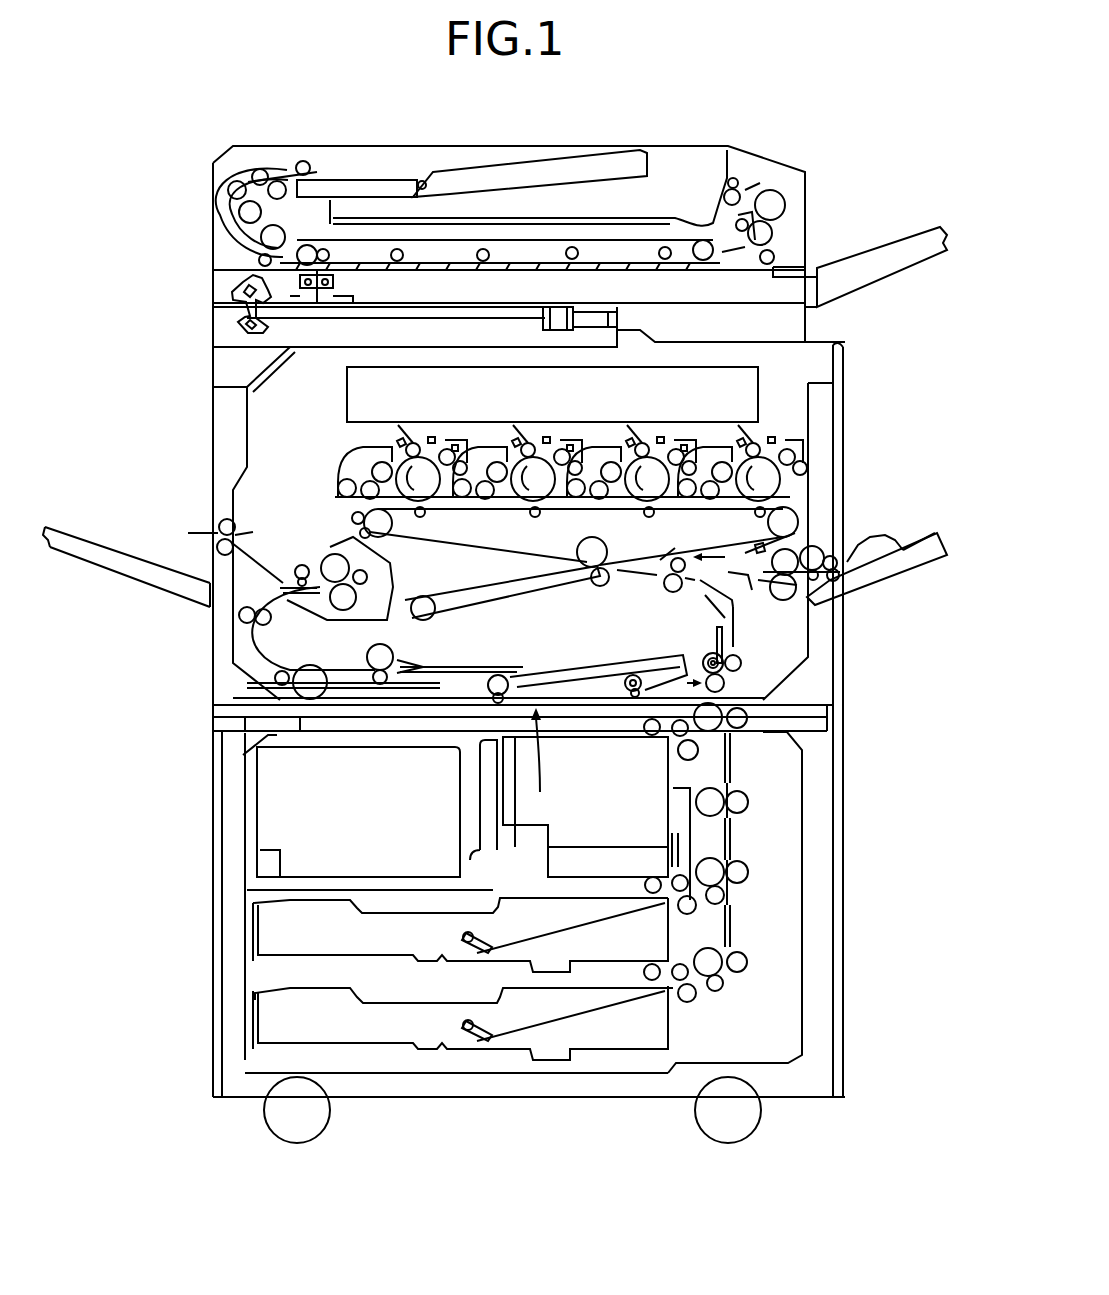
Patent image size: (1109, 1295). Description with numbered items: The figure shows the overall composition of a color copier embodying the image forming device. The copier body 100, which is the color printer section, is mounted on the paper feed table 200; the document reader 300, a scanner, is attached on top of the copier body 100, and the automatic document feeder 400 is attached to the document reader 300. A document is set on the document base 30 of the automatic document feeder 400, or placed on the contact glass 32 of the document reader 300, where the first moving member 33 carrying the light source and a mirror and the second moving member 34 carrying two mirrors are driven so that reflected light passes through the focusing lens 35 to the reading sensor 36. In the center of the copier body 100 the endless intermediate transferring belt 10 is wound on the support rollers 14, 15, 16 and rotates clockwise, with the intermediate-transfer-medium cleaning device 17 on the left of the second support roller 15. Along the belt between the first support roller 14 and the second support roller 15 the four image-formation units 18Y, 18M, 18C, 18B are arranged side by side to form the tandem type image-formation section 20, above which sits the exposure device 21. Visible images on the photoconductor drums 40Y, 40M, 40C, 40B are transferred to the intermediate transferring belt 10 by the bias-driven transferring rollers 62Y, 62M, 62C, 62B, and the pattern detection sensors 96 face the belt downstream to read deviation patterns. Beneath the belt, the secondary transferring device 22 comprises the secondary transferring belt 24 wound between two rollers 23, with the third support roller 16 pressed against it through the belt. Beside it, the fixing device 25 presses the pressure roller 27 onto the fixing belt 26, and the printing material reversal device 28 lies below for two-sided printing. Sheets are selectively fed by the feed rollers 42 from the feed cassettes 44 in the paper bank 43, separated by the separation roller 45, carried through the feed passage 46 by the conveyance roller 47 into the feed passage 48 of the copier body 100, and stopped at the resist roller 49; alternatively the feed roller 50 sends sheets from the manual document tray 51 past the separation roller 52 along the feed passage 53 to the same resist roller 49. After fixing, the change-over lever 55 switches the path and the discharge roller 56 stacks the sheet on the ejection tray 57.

The intermediate transferring belt 10 is at (583, 532).
The first support roller 14 is at (795, 513).
The second support roller 15 is at (388, 532).
The third support roller 16 is at (595, 538).
The intermediate-transfer-medium cleaning device 17 is at (350, 518).
The yellow image-formation unit 18Y is at (422, 445).
The magenta image-formation unit 18M is at (542, 445).
The cyan image-formation unit 18C is at (666, 445).
The black image-formation unit 18B is at (775, 428).
The tandem type image-formation section 20 is at (594, 436).
The exposure device 21 is at (760, 385).
The secondary transferring device 22 is at (617, 577).
The rollers 23 is at (430, 620).
The secondary transferring belt 24 is at (510, 603).
The fixing device 25 is at (293, 617).
The fixing belt 26 is at (340, 550).
The pressure roller 27 is at (343, 610).
The printing material reversal device 28 is at (549, 753).
The document base 30 is at (470, 165).
The contact glass 32 is at (612, 262).
The first moving member 33 is at (345, 283).
The second moving member 34 is at (237, 310).
The focusing lens 35 is at (548, 310).
The reading sensor 36 is at (620, 318).
The yellow photoconductor drum 40Y is at (396, 455).
The magenta photoconductor drum 40M is at (513, 455).
The cyan photoconductor drum 40C is at (643, 455).
The black photoconductor drum 40B is at (778, 485).
The feed rollers 42 is at (648, 737).
The paper bank 43 is at (283, 957).
The feed cassettes 44 is at (323, 900).
The separation roller 45 is at (677, 748).
The feed passage 46 is at (733, 837).
The conveyance roller 47 is at (738, 728).
The feed passage 48 is at (735, 644).
The resist roller 49 is at (678, 590).
The feed roller 50 is at (843, 560).
The manual document tray 51 is at (878, 567).
The separation roller 52 is at (790, 597).
The feed passage 53 is at (737, 582).
The change-over lever 55 is at (245, 610).
The discharge roller 56 is at (220, 525).
The ejection tray 57 is at (107, 570).
The yellow transferring roller 62Y is at (425, 516).
The magenta transferring roller 62M is at (535, 518).
The cyan transferring roller 62C is at (648, 517).
The black transferring roller 62B is at (759, 517).
The pattern detection sensor 96 is at (800, 537).
The copier body 100 is at (208, 444).
The paper feed table 200 is at (208, 828).
The document reader 300 is at (208, 299).
The automatic document feeder 400 is at (213, 188).